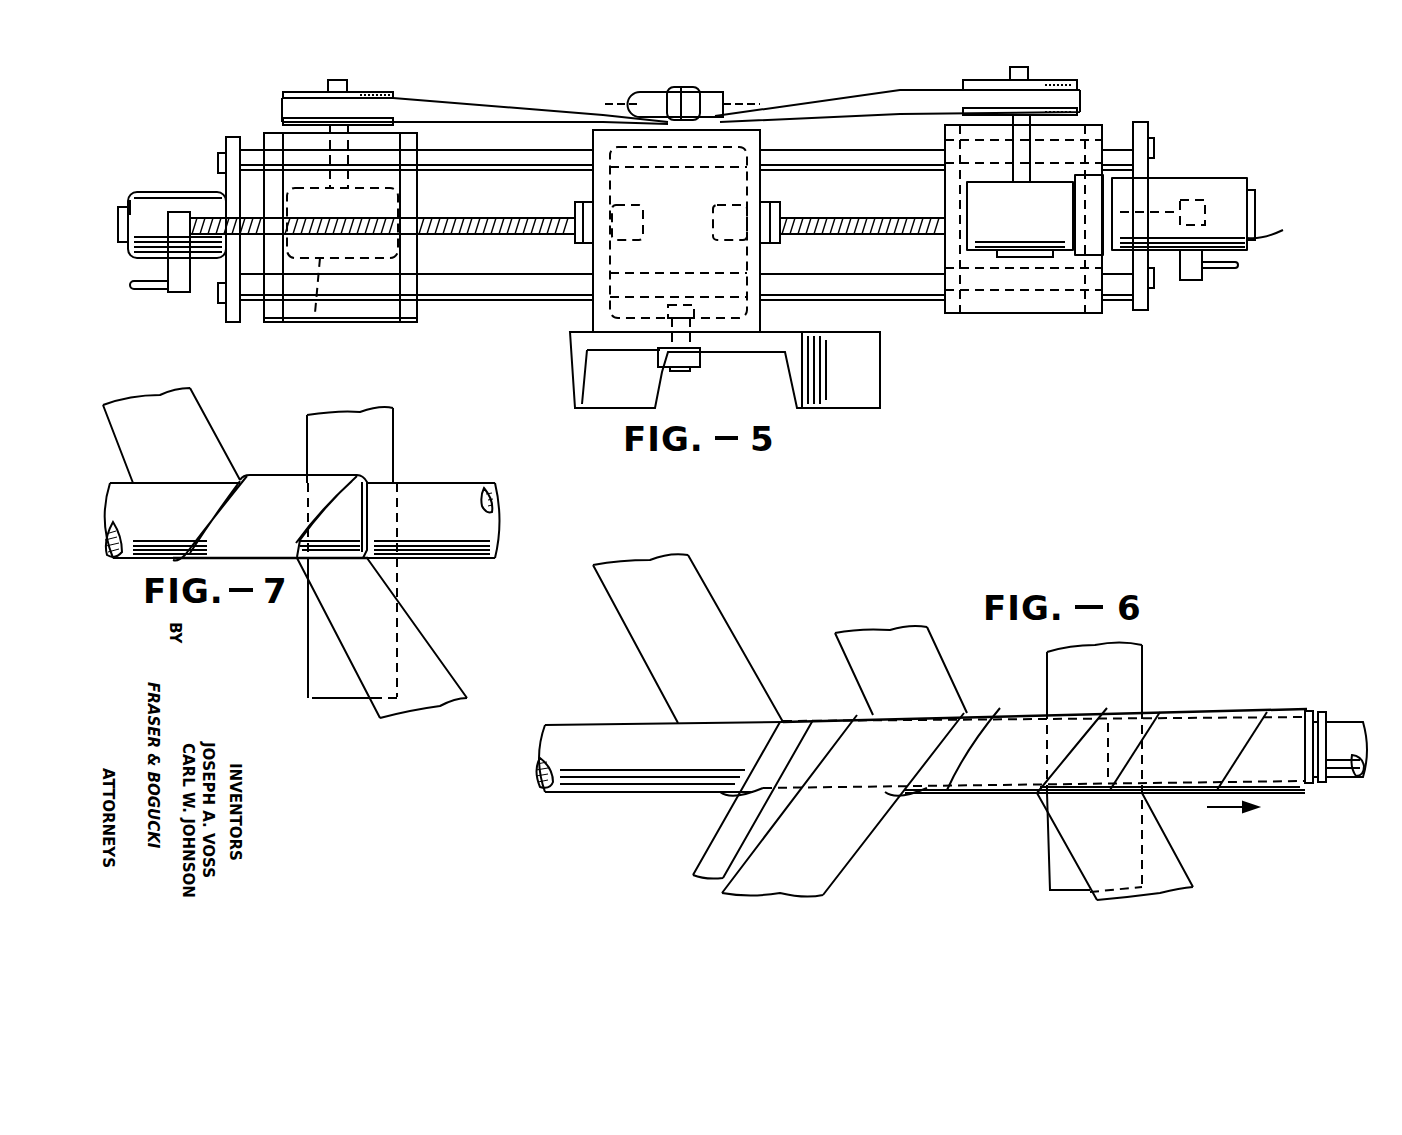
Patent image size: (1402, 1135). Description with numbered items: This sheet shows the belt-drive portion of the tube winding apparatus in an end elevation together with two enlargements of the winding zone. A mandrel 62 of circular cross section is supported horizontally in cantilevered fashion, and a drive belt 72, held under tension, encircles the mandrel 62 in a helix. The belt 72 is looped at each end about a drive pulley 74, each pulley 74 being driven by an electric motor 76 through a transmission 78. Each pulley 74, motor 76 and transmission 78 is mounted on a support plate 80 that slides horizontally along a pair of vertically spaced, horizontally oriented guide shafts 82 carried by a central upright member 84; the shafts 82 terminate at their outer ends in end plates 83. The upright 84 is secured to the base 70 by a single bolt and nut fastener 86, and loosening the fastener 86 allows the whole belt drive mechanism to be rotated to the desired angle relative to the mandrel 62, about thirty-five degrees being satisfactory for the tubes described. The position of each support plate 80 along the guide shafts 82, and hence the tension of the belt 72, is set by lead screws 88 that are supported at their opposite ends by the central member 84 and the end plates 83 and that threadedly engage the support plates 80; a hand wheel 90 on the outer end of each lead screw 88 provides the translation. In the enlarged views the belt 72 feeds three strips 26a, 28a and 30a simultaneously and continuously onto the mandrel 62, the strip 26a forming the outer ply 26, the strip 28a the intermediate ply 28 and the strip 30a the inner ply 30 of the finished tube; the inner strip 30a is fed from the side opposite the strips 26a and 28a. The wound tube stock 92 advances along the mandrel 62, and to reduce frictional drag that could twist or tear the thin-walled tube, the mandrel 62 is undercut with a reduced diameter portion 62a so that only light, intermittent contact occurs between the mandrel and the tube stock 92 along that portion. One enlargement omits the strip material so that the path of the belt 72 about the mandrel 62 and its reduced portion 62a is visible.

In FIG. 5, the base 70 is at (848, 397).
In FIG. 5, the drive belt 72 is at (432, 112).
In FIG. 7, the drive belt 72 is at (312, 435).
In FIG. 6, the drive belt 72 is at (935, 645).
In FIG. 5, the drive pulley 74 is at (365, 92).
In FIG. 5, the electric motor 76 is at (135, 192).
In FIG. 5, the transmission 78 is at (310, 313).
In FIG. 5, the support plate 80 is at (340, 322).
In FIG. 5, the guide shafts 82 is at (430, 155).
In FIG. 5, the end plates 83 is at (230, 137).
In FIG. 5, the central upright member 84 is at (765, 250).
In FIG. 5, the bolt and nut fastener 86 is at (700, 356).
In FIG. 5, the lead screws 88 is at (432, 218).
In FIG. 5, the hand wheel 90 is at (180, 292).
In FIG. 5, the mandrel 62 is at (652, 90).
In FIG. 7, the mandrel 62 is at (130, 557).
In FIG. 6, the mandrel 62 is at (623, 793).
In FIG. 7, the reduced diameter portion 62a is at (407, 483).
In FIG. 6, the reduced diameter portion 62a is at (1333, 721).
In FIG. 6, the outer ply 26 is at (1280, 708).
In FIG. 6, the strip 26a is at (872, 832).
In FIG. 6, the intermediate ply 28 is at (1310, 712).
In FIG. 6, the strip 28a is at (720, 828).
In FIG. 6, the inner ply 30 is at (1322, 712).
In FIG. 6, the strip 30a is at (717, 598).
In FIG. 6, the tube stock 92 is at (1182, 705).